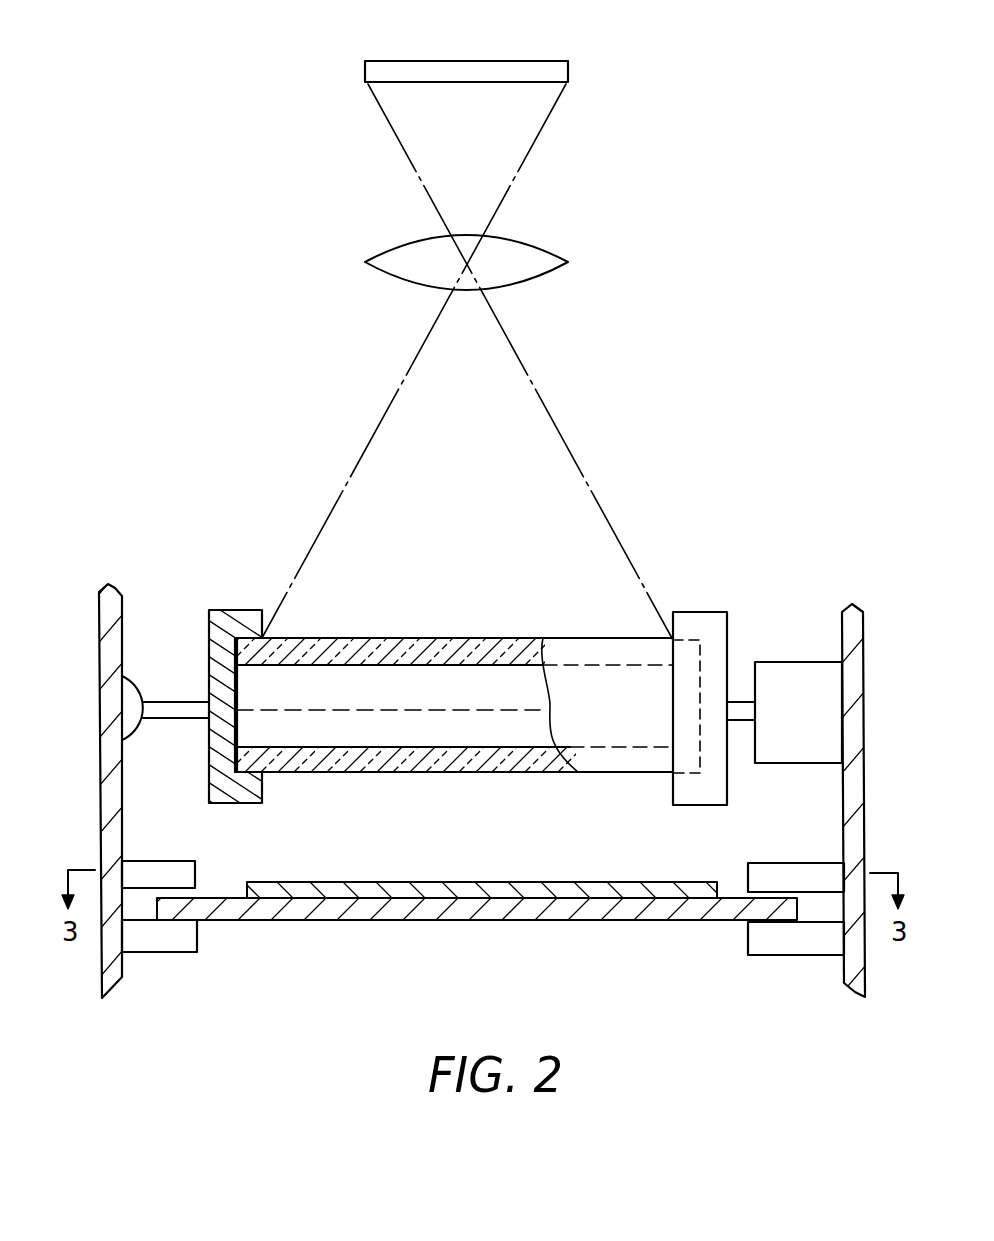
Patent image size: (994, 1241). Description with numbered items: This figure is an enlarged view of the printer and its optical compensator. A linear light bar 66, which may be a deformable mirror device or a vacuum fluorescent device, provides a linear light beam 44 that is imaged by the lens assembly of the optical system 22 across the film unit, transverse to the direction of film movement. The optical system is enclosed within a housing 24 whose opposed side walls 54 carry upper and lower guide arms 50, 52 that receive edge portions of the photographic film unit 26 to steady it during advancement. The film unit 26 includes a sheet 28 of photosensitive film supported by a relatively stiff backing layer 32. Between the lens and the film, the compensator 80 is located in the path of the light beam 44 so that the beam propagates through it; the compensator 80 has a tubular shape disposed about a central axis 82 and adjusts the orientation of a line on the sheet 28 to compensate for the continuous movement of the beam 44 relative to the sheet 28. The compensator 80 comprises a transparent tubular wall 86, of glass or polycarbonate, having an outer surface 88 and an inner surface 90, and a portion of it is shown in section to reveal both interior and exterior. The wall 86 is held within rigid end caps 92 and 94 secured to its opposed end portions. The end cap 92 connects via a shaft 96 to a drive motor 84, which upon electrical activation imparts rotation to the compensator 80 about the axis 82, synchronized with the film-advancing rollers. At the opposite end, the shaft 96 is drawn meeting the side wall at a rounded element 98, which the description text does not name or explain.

The optical system 22 is at (524, 240).
The housing 24 is at (94, 607).
The photographic film unit 26 is at (466, 906).
The sheet 28 is at (522, 866).
The backing layer 32 is at (455, 921).
The linear light beam 44 is at (345, 487).
The upper guide arm 50 is at (160, 862).
The lower guide arm 52 is at (165, 953).
The side walls 54 is at (125, 978).
The linear light bar 66 is at (519, 60).
The compensator 80 is at (439, 696).
The central axis 82 is at (522, 710).
The drive motor 84 is at (805, 660).
The tubular wall 86 is at (485, 640).
The outer surface 88 is at (500, 773).
The inner surface 90 is at (432, 752).
The end cap 92 is at (246, 608).
The end cap 94 is at (672, 800).
The shaft 96 is at (187, 700).
The ball joint 98 is at (126, 678).